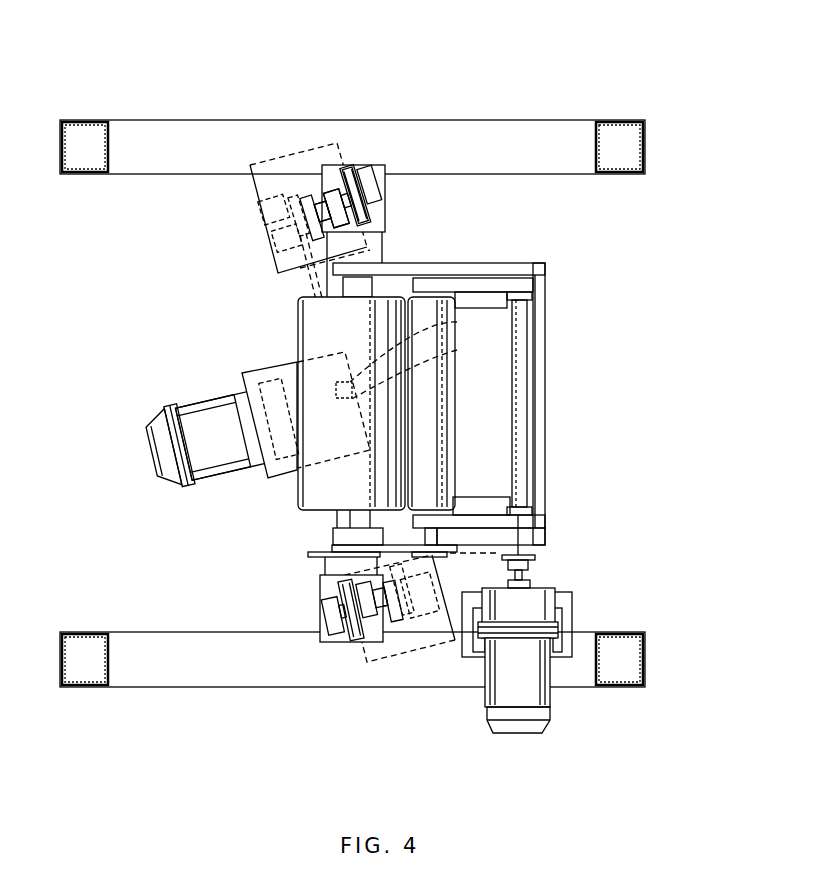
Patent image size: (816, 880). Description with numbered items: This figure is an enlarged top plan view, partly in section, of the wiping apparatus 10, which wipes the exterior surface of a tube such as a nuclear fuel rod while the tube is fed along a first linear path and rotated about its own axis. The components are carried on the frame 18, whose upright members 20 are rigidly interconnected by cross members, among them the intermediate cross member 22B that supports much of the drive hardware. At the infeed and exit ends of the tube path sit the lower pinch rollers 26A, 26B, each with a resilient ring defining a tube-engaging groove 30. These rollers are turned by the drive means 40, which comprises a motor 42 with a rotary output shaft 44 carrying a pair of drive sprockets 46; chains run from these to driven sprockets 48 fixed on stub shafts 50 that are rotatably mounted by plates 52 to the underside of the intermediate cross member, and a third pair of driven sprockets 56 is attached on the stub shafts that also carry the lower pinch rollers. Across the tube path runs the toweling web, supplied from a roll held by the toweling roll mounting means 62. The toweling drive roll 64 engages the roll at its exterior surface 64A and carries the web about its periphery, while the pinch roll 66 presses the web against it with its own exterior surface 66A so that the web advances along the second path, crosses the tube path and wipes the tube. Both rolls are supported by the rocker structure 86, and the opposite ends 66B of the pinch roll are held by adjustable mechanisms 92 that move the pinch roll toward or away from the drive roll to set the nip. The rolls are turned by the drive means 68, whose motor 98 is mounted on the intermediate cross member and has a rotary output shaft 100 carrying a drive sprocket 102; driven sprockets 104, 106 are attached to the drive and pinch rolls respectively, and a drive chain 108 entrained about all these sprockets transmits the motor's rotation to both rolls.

The wiping apparatus 10 is at (652, 70).
The frame 18 is at (172, 119).
The upright members 20 is at (85, 118).
The intermediate cross member 22B is at (437, 120).
The lower pinch roller at infeed end 26A is at (352, 634).
The lower pinch roller at exit end 26B is at (313, 180).
The tube-engaging groove 30 is at (343, 167).
The drive means 40 is at (195, 485).
The motor 42 is at (180, 470).
The rotary output shaft 44 is at (457, 350).
The drive sprockets 46 is at (457, 322).
The driven sprockets 48 is at (295, 330).
The stub shafts 50 is at (273, 218).
The plates 52 is at (280, 262).
The third pair of driven sprockets 56 is at (327, 178).
The toweling roll mounting means 62 is at (547, 296).
The toweling drive roll 64 is at (297, 308).
The exterior surface of drive roll 64A is at (300, 478).
The toweling pinch roll 66 is at (454, 474).
The exterior surface of pinch roll 66A is at (447, 438).
The opposite ends of pinch roll 66B is at (438, 288).
The drive means 68 is at (580, 597).
The rocker structure 86 is at (542, 358).
The adjustable mechanisms 92 is at (518, 300).
The motor 98 is at (548, 700).
The rotary output shaft 100 is at (525, 575).
The drive sprocket 102 is at (532, 557).
The driven sprocket 104 is at (308, 560).
The driven sprocket 106 is at (437, 545).
The drive chain 108 is at (490, 548).